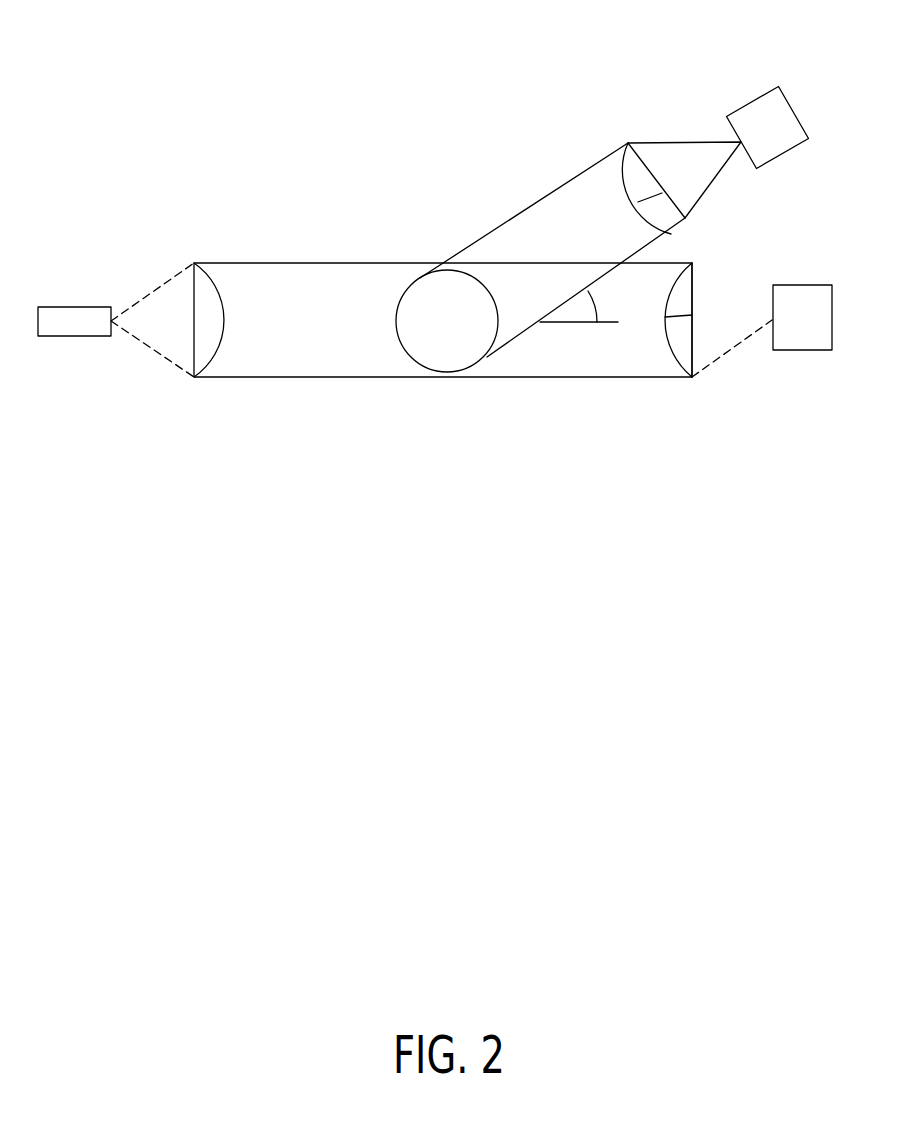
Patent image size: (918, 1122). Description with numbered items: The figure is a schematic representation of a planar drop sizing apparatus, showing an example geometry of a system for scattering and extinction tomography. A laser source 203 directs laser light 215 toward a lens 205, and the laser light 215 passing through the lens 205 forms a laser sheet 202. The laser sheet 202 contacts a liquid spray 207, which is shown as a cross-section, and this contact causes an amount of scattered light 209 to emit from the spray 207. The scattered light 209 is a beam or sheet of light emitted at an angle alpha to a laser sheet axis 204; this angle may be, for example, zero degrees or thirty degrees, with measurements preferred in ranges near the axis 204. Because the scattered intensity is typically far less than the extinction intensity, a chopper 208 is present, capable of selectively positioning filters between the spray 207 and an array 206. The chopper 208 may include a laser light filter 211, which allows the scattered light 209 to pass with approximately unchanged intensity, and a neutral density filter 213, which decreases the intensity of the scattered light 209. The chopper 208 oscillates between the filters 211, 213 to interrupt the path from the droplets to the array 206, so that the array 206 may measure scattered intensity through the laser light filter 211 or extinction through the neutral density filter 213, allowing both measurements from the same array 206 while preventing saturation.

The laser sheet 202 is at (308, 285).
The laser source 203 is at (73, 340).
The laser sheet axis 204 is at (597, 325).
The lens 205 is at (201, 263).
The array 206 is at (750, 102).
The liquid spray 207 is at (410, 357).
The chopper 208 is at (694, 292).
The scattered light 209 is at (528, 348).
The laser light filter 211 is at (685, 365).
The neutral density filter 213 is at (694, 262).
The laser light 215 is at (140, 300).